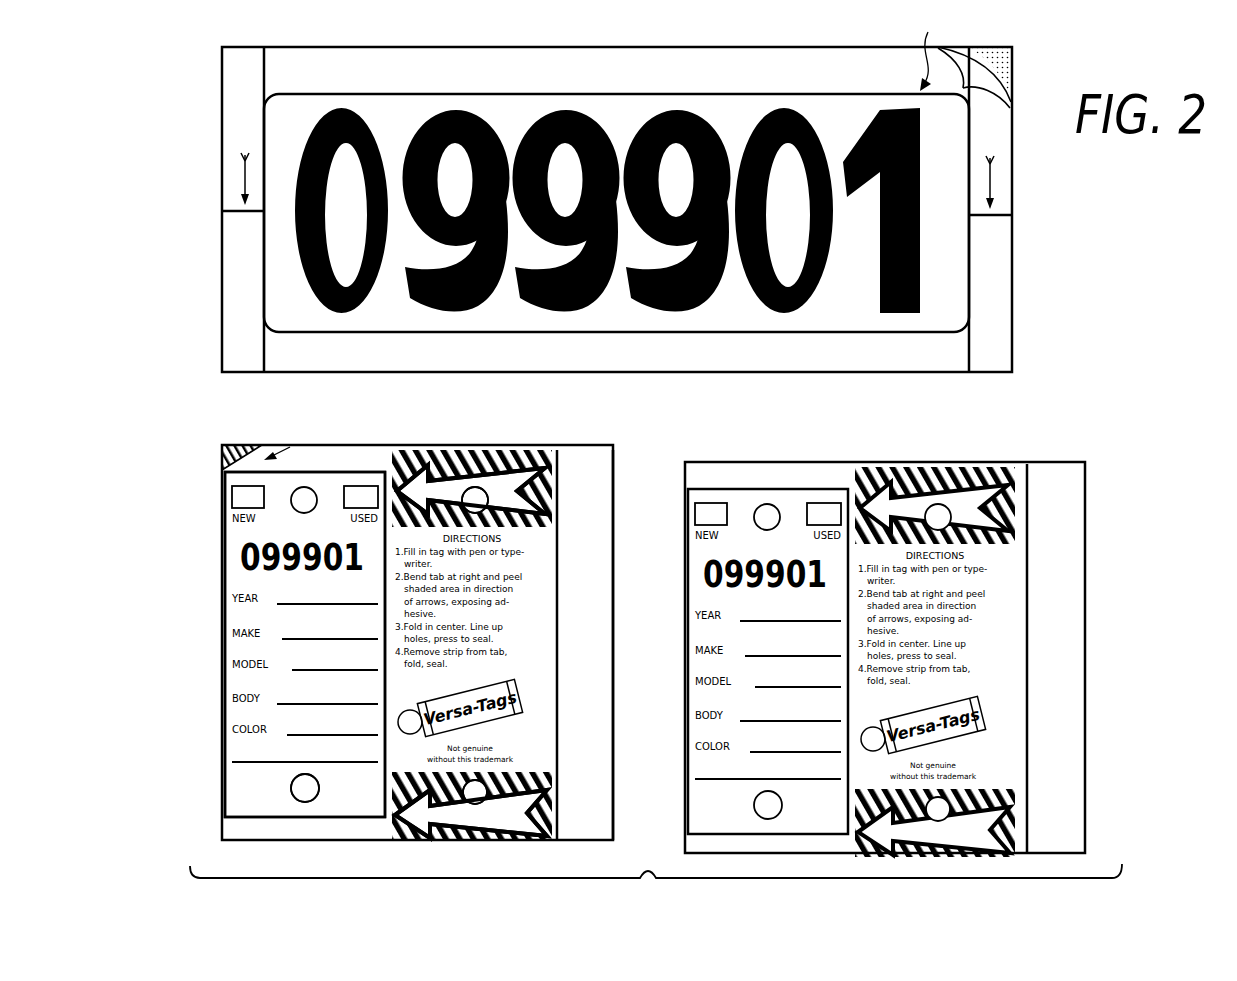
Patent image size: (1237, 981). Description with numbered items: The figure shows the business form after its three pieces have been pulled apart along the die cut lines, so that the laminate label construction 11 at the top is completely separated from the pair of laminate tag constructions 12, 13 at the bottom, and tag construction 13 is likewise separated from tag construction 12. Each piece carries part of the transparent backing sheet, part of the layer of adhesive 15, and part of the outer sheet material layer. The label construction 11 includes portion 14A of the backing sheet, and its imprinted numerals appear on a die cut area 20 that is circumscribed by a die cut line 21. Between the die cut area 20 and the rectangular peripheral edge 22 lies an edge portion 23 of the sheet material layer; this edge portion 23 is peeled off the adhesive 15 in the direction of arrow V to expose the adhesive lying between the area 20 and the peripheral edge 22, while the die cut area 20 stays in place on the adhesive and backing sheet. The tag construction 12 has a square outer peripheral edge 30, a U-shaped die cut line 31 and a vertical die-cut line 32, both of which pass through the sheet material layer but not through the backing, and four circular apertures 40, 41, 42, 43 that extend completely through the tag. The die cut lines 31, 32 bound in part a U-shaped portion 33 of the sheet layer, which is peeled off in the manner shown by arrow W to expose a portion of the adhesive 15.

The laminate label construction 11 is at (692, 30).
The laminate tag construction 12 is at (336, 852).
The laminate tag construction 13 is at (980, 440).
The portion of backing sheet 14A is at (998, 48).
The layer of adhesive 15 is at (1011, 78).
The die cut area 20 is at (733, 96).
The die cut line 21 is at (606, 96).
The rectangular peripheral edge 22 is at (566, 47).
The edge portion 23 is at (392, 59).
The square outer peripheral edge 30 is at (433, 448).
The U-shaped die cut line 31 is at (385, 470).
The vertical die-cut line 32 is at (592, 468).
The U-shaped portion 33 is at (616, 652).
The circular aperture 40 is at (275, 557).
The circular aperture 41 is at (291, 792).
The circular aperture 42 is at (497, 449).
The circular aperture 43 is at (486, 834).
The arrow V is at (932, 49).
The arrow W is at (290, 447).